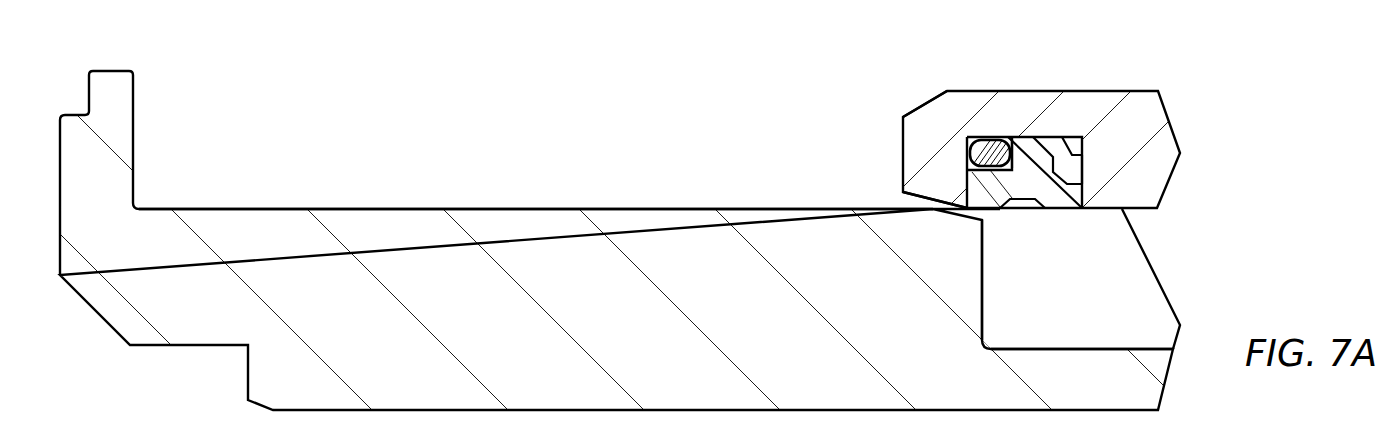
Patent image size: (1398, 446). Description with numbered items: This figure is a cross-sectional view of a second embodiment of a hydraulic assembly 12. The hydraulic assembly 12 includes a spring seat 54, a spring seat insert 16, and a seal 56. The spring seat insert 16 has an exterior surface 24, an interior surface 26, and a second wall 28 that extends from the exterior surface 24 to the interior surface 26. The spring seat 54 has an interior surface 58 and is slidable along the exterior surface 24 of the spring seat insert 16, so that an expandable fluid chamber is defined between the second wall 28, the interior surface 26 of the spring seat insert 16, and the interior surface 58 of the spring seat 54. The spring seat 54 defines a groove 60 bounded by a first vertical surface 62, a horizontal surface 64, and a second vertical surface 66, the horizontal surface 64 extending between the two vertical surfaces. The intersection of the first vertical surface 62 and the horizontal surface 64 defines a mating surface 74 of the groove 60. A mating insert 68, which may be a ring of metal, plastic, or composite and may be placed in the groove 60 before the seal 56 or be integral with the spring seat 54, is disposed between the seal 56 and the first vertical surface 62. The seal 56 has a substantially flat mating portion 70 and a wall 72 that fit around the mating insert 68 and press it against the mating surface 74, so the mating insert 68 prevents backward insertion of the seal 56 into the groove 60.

The hydraulic assembly 12 is at (283, 88).
The spring seat insert 16 is at (535, 247).
The exterior surface 24 is at (668, 208).
The interior surface 26 is at (1083, 348).
The second wall 28 is at (983, 287).
The spring seat 54 is at (1125, 91).
The seal 56 is at (1020, 178).
The interior surface 58 is at (1147, 240).
The groove 60 is at (1072, 137).
The first vertical surface 62 is at (958, 195).
The horizontal surface 64 is at (1042, 137).
The second vertical surface 66 is at (1085, 163).
The mating insert 68 is at (972, 150).
The mating portion 70 is at (988, 168).
The wall 72 is at (1022, 150).
The mating surface 74 is at (967, 133).